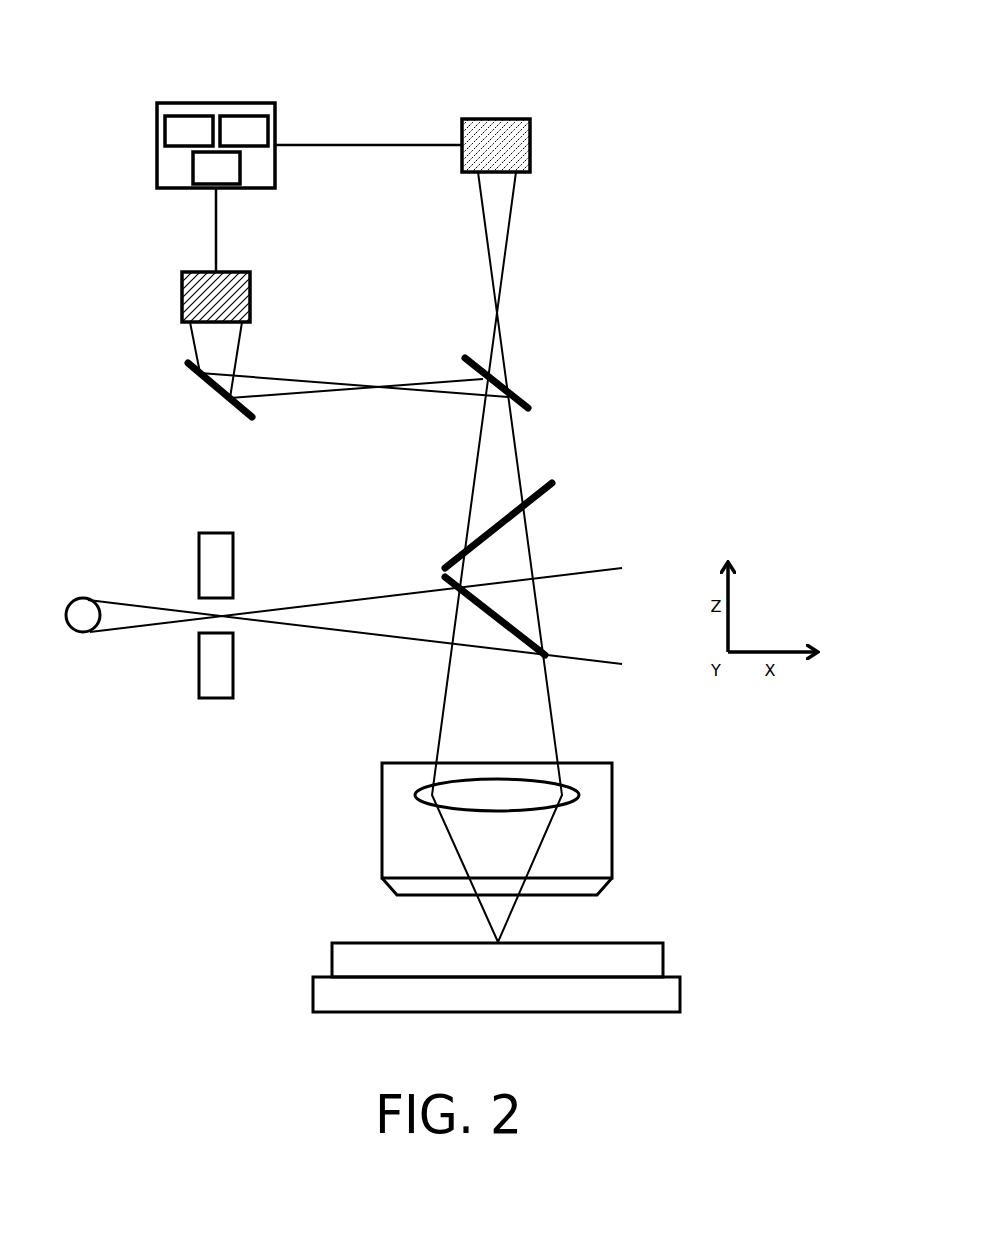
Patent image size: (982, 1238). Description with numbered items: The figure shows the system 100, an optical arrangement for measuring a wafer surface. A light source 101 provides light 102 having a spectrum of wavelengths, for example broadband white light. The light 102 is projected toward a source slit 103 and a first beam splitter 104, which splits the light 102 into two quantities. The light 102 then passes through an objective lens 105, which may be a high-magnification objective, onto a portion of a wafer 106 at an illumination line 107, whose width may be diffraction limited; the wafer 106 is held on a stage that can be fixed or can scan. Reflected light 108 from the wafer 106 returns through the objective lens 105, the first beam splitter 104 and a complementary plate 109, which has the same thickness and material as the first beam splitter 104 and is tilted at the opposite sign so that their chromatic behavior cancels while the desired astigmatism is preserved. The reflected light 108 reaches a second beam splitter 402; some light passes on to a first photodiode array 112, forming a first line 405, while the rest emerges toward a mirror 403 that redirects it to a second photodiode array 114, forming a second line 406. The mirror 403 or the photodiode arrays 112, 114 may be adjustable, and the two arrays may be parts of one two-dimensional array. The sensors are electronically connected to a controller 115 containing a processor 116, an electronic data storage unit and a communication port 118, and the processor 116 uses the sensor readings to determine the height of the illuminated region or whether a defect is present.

The system 100 is at (706, 788).
The light source 101 is at (83, 632).
The light 102 is at (144, 648).
The source slit 103 is at (217, 698).
The first beam splitter 104 is at (547, 657).
The objective lens 105 is at (382, 818).
The wafer 106 is at (497, 960).
The illumination line 107 is at (515, 933).
The reflected light 108 is at (533, 458).
The complementary plate 109 is at (555, 481).
The first photodiode array 112 is at (498, 119).
The second photodiode array 114 is at (182, 307).
The controller 115 is at (216, 116).
The processor 116 is at (189, 131).
The communication port 118 is at (216, 168).
The second beam splitter 402 is at (530, 410).
The mirror 403 is at (186, 361).
The first line 405 is at (520, 320).
The second line 406 is at (298, 368).